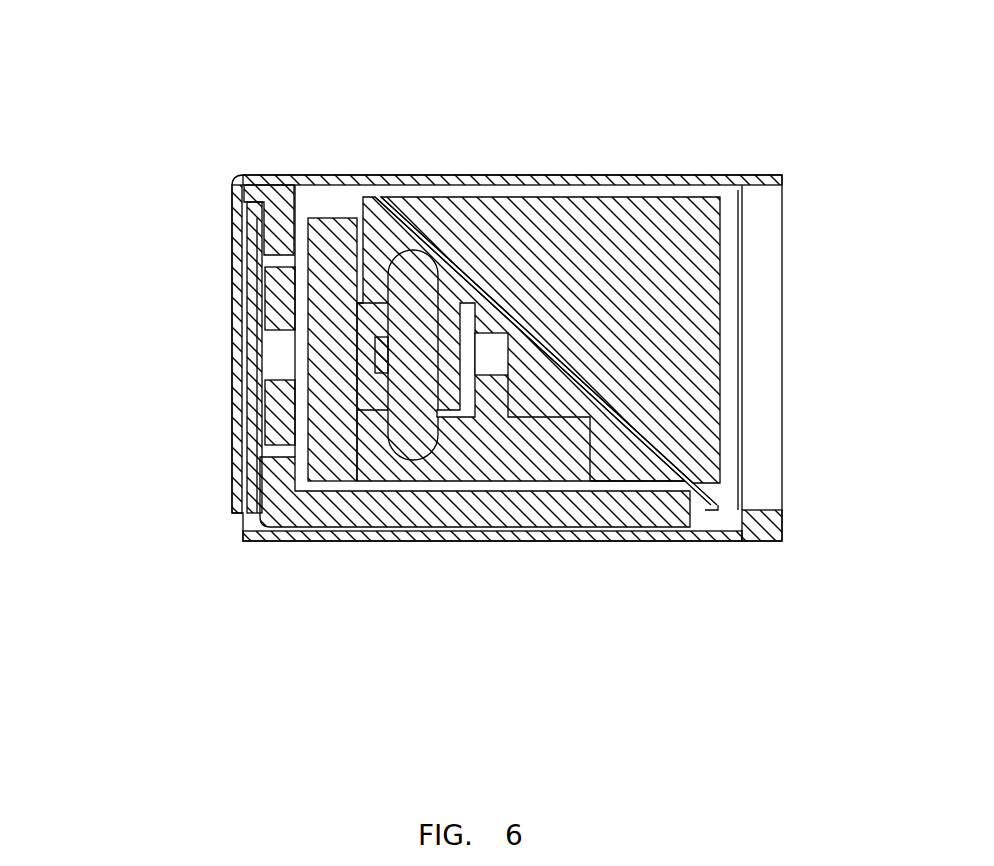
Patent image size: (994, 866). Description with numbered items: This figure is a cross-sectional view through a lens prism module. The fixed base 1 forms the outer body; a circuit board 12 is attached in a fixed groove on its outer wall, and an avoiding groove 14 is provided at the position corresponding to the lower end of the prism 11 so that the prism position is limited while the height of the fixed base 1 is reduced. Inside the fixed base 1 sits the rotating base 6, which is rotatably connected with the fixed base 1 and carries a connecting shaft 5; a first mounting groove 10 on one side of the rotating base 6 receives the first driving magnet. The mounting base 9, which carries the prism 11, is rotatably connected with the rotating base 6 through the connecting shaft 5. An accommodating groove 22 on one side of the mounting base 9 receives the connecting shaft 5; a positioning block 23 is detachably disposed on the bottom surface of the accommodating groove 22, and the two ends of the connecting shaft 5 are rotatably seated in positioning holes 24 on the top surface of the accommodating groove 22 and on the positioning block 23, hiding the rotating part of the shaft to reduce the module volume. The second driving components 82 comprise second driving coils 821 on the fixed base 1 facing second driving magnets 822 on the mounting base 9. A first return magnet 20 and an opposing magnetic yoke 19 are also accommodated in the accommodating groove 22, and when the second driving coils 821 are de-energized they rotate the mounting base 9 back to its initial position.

The fixed base 1 is at (275, 500).
The connecting shaft 5 is at (414, 275).
The rotating base 6 is at (312, 232).
The mounting base 9 is at (620, 465).
The first mounting groove 10 is at (335, 390).
The prism 11 is at (655, 340).
The circuit board 12 is at (268, 235).
The avoiding groove 14 is at (705, 514).
The magnetic yoke 19 is at (436, 413).
The first return magnet 20 is at (500, 340).
The accommodating groove 22 is at (465, 305).
The positioning block 23 is at (530, 460).
The positioning holes 24 is at (390, 437).
The second driving components 82 is at (97, 383).
The second driving coils 821 is at (280, 282).
The second driving magnets 822 is at (328, 308).